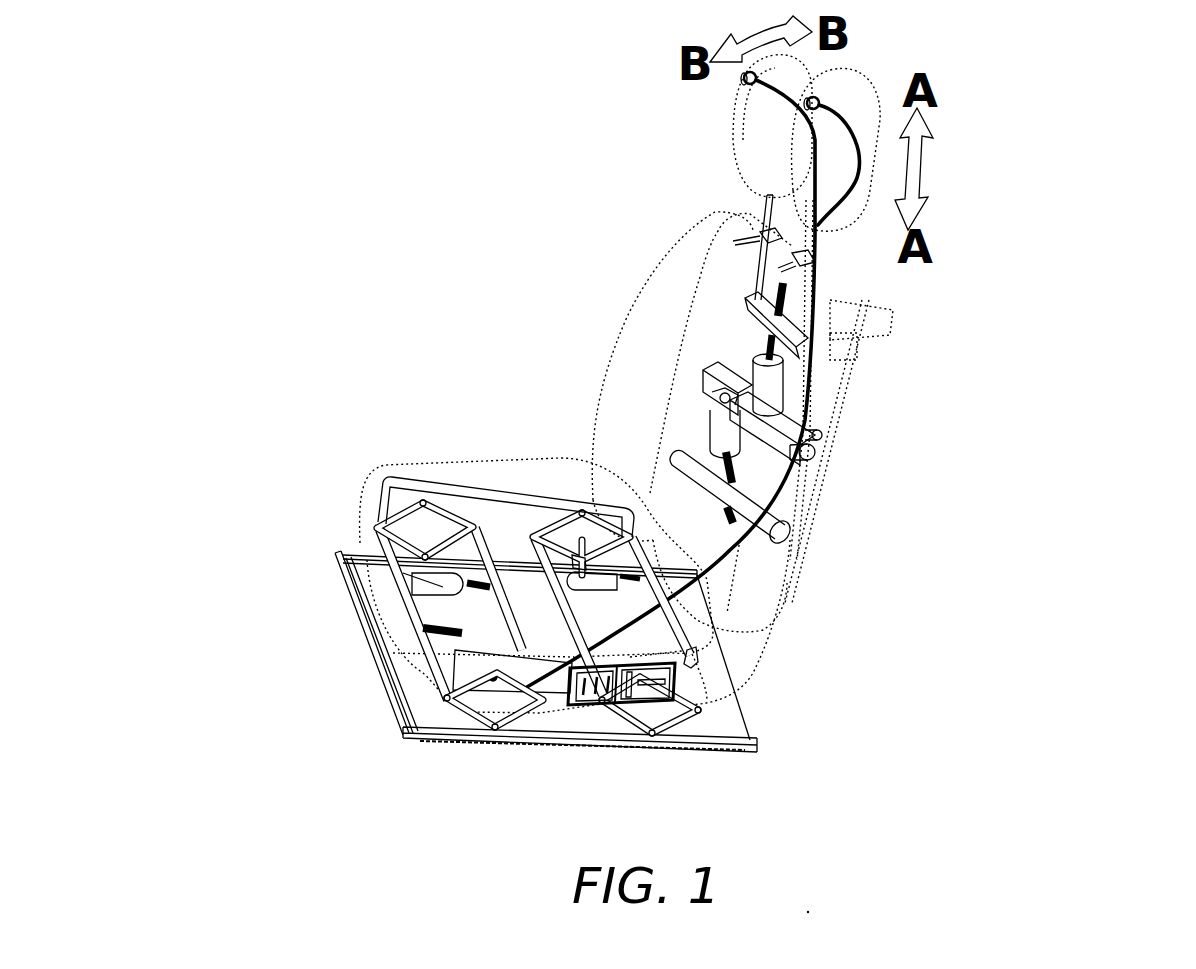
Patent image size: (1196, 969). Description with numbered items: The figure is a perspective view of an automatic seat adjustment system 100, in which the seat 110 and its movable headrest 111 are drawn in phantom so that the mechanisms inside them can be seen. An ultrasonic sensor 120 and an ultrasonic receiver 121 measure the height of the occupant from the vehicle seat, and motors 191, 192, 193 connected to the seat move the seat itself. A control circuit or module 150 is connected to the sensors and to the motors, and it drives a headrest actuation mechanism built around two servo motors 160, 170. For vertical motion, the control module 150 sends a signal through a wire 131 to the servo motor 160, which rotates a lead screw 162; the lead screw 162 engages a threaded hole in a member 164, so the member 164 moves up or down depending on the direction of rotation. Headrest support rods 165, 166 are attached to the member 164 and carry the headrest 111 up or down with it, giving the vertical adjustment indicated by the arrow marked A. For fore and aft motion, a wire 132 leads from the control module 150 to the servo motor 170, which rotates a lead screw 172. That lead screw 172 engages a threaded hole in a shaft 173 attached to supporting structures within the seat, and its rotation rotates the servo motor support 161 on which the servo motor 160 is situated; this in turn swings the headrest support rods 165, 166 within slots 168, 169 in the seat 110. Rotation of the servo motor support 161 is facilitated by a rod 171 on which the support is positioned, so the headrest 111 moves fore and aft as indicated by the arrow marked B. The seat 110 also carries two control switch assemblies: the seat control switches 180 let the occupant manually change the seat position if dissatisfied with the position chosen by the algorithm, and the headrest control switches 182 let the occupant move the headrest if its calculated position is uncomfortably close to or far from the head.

The automatic seat adjustment system 100 is at (777, 718).
The seat 110 is at (760, 587).
The movable headrest 111 is at (850, 128).
The ultrasonic sensor 120 is at (803, 106).
The ultrasonic receiver 121 is at (748, 80).
The wire 131 is at (822, 431).
The wire 132 is at (785, 487).
The control circuit or module 150 is at (417, 675).
The servo motor 160 is at (740, 319).
The servo motor support 161 is at (767, 413).
The lead screw 162 is at (785, 305).
The member 164 is at (795, 350).
The headrest support rod 165 is at (748, 290).
The headrest support rod 166 is at (755, 305).
The slot 168 is at (730, 238).
The slot 169 is at (778, 267).
The servo motor 170 is at (697, 521).
The rod 171 is at (812, 460).
The lead screw 172 is at (720, 463).
The shaft 173 is at (792, 533).
The seat control switch assembly 180 is at (600, 707).
The headrest control switch assembly 182 is at (720, 747).
The motor 191 is at (383, 480).
The motor 192 is at (377, 553).
The motor 193 is at (400, 628).